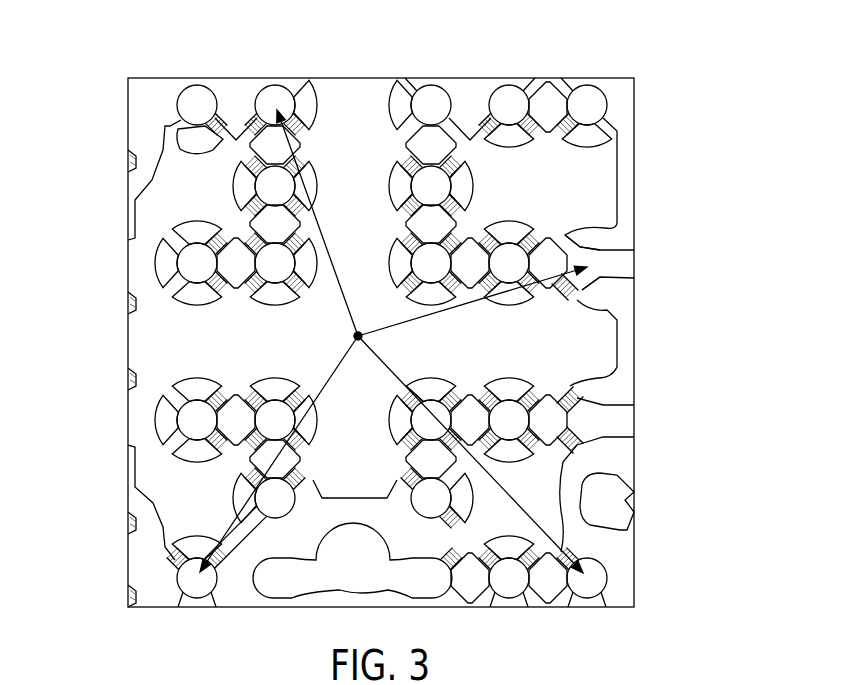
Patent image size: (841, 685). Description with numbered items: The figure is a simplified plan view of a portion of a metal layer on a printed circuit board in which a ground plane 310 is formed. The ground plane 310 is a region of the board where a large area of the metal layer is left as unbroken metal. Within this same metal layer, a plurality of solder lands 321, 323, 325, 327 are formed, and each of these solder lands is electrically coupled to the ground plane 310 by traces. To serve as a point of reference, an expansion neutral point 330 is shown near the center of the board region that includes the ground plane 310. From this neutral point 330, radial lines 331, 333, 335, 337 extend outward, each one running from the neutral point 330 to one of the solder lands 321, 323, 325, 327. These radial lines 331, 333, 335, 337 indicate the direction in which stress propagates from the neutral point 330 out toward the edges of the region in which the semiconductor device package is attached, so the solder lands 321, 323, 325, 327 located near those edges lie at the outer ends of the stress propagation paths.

The ground plane 310 is at (357, 125).
The solder land 321 is at (254, 93).
The solder land 323 is at (587, 255).
The solder land 325 is at (198, 593).
The solder land 327 is at (597, 583).
The expansion neutral point 330 is at (354, 337).
The radial line 331 is at (293, 148).
The radial line 333 is at (422, 322).
The radial line 335 is at (227, 527).
The radial line 337 is at (503, 490).